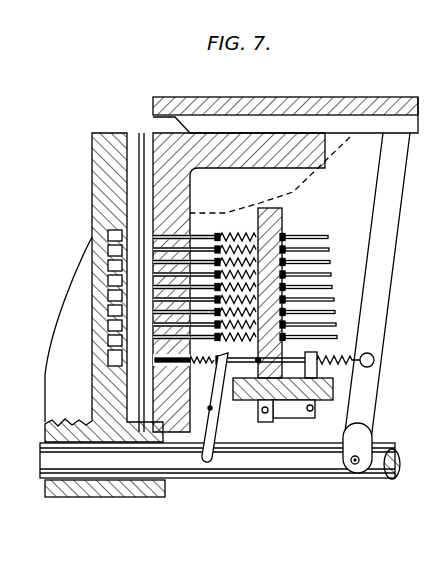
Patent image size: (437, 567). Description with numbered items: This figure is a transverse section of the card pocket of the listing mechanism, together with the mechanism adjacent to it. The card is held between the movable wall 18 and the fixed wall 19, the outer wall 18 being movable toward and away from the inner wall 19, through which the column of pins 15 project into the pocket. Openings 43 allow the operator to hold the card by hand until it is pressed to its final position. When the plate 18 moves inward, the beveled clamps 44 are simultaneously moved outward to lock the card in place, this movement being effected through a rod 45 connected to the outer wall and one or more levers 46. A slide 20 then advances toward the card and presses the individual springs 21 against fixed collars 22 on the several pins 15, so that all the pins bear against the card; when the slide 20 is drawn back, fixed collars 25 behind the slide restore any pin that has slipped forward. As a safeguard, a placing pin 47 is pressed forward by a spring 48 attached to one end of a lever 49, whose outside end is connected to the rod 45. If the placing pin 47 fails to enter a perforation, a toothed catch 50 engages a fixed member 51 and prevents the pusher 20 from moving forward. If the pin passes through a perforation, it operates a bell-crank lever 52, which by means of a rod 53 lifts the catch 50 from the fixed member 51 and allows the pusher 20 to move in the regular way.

The pins 15 is at (322, 236).
The movable wall 18 is at (92, 394).
The fixed wall 19 is at (181, 175).
The slide 20 is at (283, 216).
The springs 21 is at (256, 230).
The fixed collars 22 is at (242, 229).
The fixed collars 25 is at (285, 241).
The openings 43 is at (80, 198).
The clamps 44 is at (208, 125).
The rod 45 is at (237, 470).
The lever 46 is at (386, 300).
The placing pin 47 is at (254, 358).
The spring 48 is at (219, 366).
The lever 49 is at (212, 428).
The toothed catch 50 is at (290, 357).
The fixed member 51 is at (335, 390).
The bell-crank lever 52 is at (296, 405).
The rod 53 is at (268, 423).